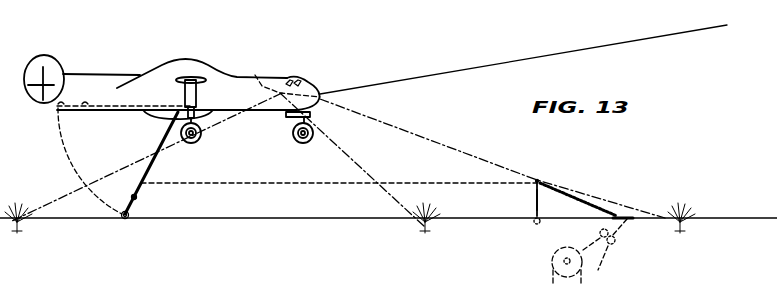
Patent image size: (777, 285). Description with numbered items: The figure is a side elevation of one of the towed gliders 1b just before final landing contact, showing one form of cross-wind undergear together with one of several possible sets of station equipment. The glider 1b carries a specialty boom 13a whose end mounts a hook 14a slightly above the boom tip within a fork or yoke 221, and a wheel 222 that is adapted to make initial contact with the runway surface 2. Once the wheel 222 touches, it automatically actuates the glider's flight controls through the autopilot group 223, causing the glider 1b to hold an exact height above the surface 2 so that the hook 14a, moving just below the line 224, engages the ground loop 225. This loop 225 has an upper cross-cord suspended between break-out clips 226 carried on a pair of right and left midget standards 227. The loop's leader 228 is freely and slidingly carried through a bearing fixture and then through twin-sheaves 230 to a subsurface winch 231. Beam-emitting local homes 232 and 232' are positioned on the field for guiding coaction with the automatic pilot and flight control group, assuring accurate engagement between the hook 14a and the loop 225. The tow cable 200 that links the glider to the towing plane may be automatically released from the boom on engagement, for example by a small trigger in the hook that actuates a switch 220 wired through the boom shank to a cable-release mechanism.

The glider 1b is at (304, 77).
The autopilot group 223 is at (257, 69).
The cable 200 is at (643, 38).
The fork or yoke 221 is at (137, 170).
The specialty boom 13a is at (163, 140).
The hook 14a is at (137, 198).
The wheel 222 is at (125, 219).
The line 224 is at (268, 182).
The runway 2 is at (305, 218).
The local home 232 is at (364, 235).
The local home 232' is at (437, 234).
The break-out clips 226 is at (549, 150).
The midget standards 227 is at (537, 200).
The ground loop 225 is at (567, 197).
The leader 228 is at (613, 213).
The switch 220 is at (628, 222).
The twin-sheaves 230 is at (605, 261).
The subsurface winch 231 is at (553, 252).